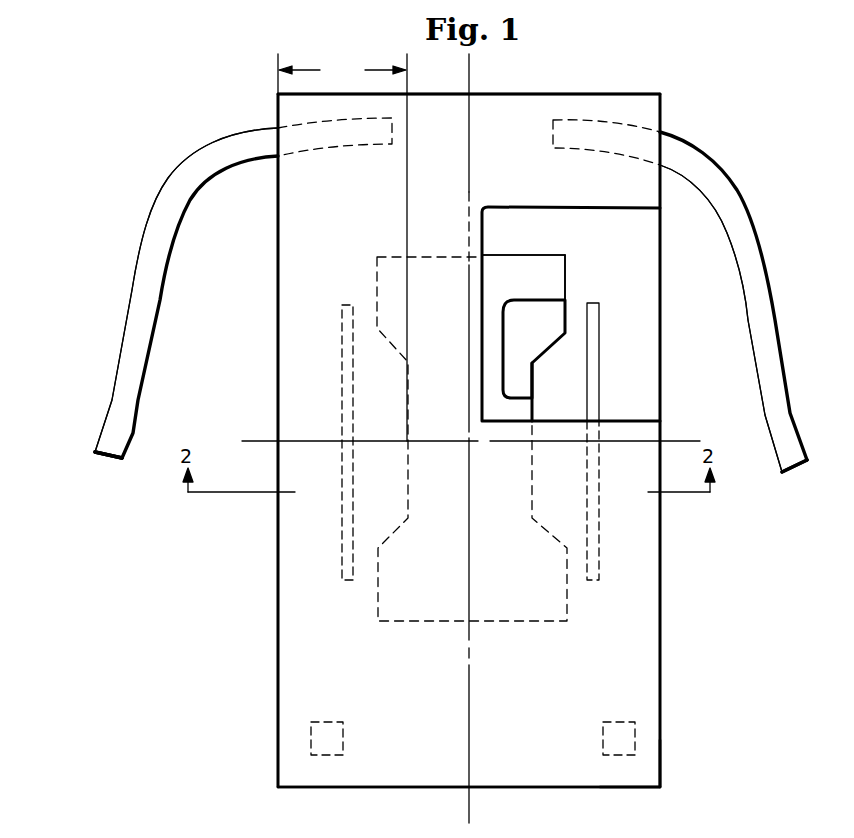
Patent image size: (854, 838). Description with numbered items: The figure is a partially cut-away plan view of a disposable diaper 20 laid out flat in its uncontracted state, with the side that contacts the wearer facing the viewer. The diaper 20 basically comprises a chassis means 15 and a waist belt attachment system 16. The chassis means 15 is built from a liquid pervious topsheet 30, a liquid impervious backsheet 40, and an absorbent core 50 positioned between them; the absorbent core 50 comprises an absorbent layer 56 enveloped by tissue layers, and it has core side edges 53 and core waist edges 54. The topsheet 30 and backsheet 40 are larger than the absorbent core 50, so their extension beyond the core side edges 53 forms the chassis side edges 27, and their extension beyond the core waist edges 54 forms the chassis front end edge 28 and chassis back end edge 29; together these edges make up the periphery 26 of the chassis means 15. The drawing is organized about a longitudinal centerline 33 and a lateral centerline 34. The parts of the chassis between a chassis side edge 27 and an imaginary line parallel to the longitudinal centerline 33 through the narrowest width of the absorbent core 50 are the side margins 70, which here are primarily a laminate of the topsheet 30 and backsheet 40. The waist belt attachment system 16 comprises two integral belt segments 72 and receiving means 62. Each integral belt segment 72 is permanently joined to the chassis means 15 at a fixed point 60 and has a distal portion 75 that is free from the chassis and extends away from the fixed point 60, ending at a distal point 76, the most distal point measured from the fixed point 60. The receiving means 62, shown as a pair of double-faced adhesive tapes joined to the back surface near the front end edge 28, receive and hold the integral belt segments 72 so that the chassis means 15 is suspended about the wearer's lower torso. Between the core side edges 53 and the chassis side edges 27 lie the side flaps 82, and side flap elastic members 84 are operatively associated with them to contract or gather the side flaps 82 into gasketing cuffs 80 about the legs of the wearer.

The chassis means 15 is at (685, 569).
The waist belt attachment system 16 is at (147, 484).
The diaper 20 is at (651, 78).
The periphery 26 is at (536, 788).
The chassis side edges 27 is at (278, 550).
The chassis front end edge 28 is at (607, 788).
The chassis back end edge 29 is at (558, 94).
The topsheet 30 is at (528, 184).
The longitudinal centerline 33 is at (469, 806).
The lateral centerline 34 is at (260, 441).
The backsheet 40 is at (634, 245).
The absorbent core 50 is at (522, 288).
The core side edges 53 is at (567, 280).
The core waist edges 54 is at (530, 255).
The absorbent layer 56 is at (539, 335).
The fixed points 60 is at (405, 122).
The receiving means 62 is at (325, 758).
The side margins 70 is at (342, 247).
The integral belt segments 72 is at (145, 266).
The distal portion 75 is at (158, 177).
The distal point 76 is at (108, 462).
The gasketing cuffs 80 is at (366, 380).
The side flaps 82 is at (300, 330).
The side flap elastic members 84 is at (593, 318).